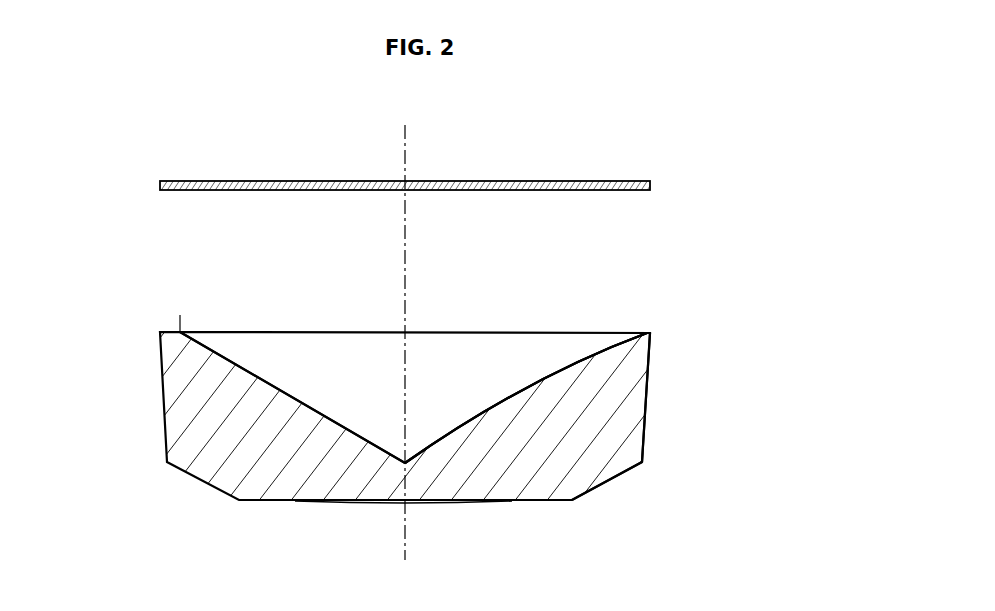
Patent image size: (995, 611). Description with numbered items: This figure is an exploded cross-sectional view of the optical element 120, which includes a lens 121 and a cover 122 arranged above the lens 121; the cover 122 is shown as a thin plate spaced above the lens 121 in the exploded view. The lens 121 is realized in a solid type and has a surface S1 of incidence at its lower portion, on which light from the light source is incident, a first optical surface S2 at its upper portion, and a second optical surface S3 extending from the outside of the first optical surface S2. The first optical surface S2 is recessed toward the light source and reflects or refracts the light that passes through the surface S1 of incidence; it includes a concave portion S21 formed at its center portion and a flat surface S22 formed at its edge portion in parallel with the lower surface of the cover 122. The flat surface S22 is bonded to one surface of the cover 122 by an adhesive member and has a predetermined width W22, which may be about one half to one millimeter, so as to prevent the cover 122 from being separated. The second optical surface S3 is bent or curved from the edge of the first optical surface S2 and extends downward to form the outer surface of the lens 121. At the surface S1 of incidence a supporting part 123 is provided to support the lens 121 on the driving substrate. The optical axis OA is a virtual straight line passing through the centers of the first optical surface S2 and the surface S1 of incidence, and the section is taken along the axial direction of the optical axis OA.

The optical element 120 is at (180, 134).
The lens 121 is at (327, 324).
The cover 122 is at (653, 184).
The supporting part 123 is at (547, 508).
The surface of incidence S1 is at (332, 505).
The first optical surface S2 is at (665, 263).
The concave portion S21 is at (556, 357).
The flat surface S22 is at (638, 352).
The second optical surface S3 is at (646, 401).
The width W22 is at (222, 323).
The optical axis OA is at (405, 356).